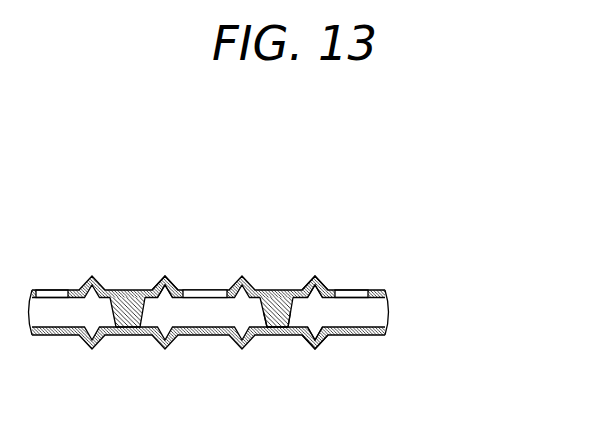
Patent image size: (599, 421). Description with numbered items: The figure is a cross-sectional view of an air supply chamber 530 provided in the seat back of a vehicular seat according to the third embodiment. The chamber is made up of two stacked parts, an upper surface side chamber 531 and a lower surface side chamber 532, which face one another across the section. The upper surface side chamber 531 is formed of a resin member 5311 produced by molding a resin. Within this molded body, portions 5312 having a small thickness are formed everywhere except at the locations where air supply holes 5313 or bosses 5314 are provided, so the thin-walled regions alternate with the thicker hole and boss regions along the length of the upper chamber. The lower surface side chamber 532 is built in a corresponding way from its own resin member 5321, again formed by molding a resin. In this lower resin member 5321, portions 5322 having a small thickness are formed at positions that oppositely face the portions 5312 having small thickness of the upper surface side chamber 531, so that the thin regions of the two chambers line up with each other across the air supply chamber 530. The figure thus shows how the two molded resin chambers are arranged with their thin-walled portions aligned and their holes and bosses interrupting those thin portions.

The wiring board laminate 530 is at (294, 294).
The upper surface side chamber 531 is at (256, 260).
The lower surface side chamber 532 is at (256, 353).
The resin member 5311 is at (181, 291).
The portion having a small thickness 5312 is at (320, 280).
The air supply holes 5313 is at (208, 291).
The bosses 5314 is at (283, 291).
The resin member 5321 is at (283, 337).
The portions having a small thickness 5322 is at (316, 348).